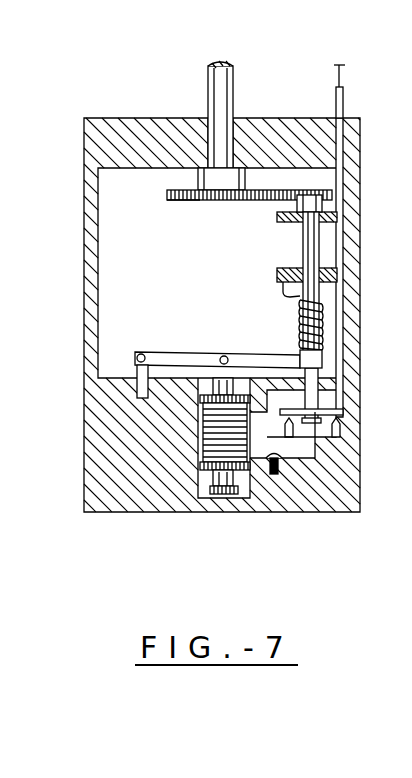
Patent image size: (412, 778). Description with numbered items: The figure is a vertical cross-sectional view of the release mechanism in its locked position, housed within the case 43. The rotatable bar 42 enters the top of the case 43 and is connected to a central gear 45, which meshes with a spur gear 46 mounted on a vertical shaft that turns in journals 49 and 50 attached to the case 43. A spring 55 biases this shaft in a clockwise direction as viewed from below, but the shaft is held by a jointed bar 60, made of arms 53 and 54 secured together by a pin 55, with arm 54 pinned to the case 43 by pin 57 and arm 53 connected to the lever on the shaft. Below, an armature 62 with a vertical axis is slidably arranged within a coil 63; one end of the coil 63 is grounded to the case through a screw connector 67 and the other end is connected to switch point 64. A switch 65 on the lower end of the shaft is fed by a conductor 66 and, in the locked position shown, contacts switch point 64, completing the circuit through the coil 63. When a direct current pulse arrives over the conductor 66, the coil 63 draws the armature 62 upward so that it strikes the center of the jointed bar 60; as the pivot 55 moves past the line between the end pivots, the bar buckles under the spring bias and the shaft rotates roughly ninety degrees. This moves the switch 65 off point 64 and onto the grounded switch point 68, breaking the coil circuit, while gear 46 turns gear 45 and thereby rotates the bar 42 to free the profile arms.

The rotatable bar 42 is at (233, 92).
The case 43 is at (84, 237).
The central gear 45 is at (167, 200).
The spur gear 46 is at (332, 195).
The journal 49 is at (277, 218).
The journal 50 is at (290, 270).
The arm 53 is at (303, 335).
The arm 54 is at (185, 352).
The pin 55 is at (268, 354).
The pin 57 is at (137, 387).
The jointed bar 60 is at (178, 352).
The armature 62 is at (223, 497).
The coil 63 is at (200, 433).
The switch point 64 is at (343, 458).
The switch 65 is at (343, 412).
The conductor 66 is at (343, 392).
The screw connector 67 is at (278, 462).
The switch point 68 is at (340, 435).